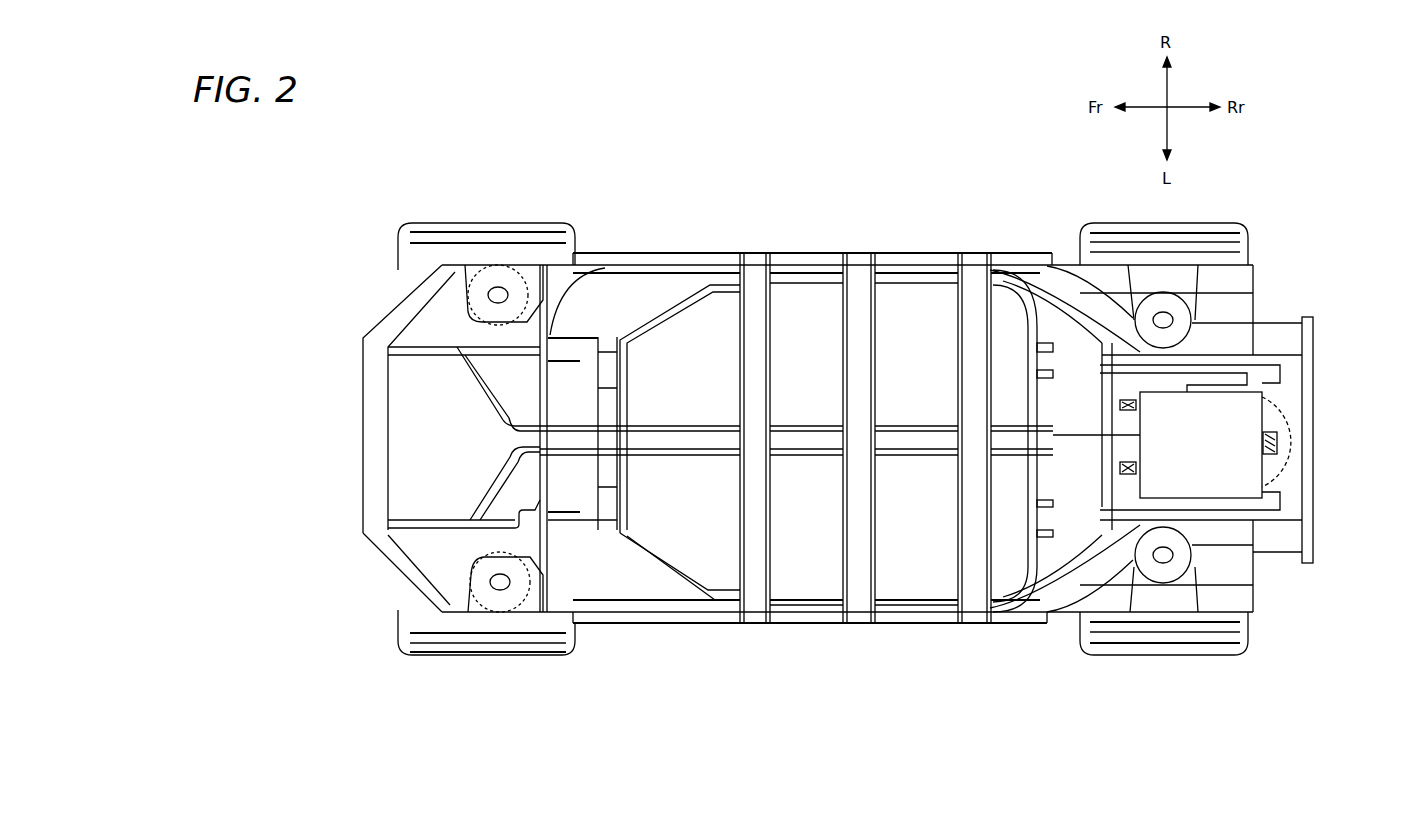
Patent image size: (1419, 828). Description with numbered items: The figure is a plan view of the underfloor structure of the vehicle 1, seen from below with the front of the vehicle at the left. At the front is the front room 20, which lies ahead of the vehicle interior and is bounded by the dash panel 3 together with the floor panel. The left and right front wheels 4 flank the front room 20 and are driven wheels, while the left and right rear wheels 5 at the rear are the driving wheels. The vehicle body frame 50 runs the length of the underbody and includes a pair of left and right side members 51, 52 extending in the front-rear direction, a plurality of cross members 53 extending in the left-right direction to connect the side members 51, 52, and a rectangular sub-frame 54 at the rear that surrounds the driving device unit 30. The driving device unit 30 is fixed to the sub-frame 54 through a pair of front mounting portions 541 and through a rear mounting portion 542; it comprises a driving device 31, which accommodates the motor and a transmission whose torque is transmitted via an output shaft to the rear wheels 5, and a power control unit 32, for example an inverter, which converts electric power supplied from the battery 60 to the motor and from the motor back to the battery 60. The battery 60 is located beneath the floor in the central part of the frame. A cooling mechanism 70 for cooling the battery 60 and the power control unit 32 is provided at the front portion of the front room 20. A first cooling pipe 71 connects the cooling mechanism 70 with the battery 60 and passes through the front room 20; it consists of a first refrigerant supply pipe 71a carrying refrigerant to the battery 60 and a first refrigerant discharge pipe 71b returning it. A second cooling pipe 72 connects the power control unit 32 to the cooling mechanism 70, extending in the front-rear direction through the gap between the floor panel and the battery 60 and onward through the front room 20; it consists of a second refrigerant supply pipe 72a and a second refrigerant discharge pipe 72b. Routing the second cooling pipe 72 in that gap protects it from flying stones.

The vehicle 1 is at (878, 183).
The dash panel 3 is at (583, 362).
The front wheels 4 is at (515, 222).
The rear wheels 5 is at (1190, 222).
The front room 20 is at (437, 456).
The driving device unit 30 is at (1270, 417).
The driving device 31 is at (1243, 478).
The power control unit (PCU) 32 is at (1237, 390).
The vehicle body frame 50 is at (937, 254).
The side member 51 is at (882, 252).
The side member 52 is at (906, 624).
The cross members 53 is at (565, 362).
The sub-frame 54 is at (1273, 393).
The battery 60 is at (803, 344).
The cooling mechanism 70 is at (362, 440).
The first cooling pipe 71 is at (540, 540).
The first refrigerant supply pipe 71a is at (493, 520).
The first refrigerant discharge pipe 71b is at (490, 372).
The second cooling pipe 72 is at (1070, 450).
The second refrigerant supply pipe 72a is at (710, 447).
The second refrigerant discharge pipe 72b is at (672, 422).
The front mounting portions 541 is at (1090, 355).
The rear mounting portion 542 is at (1280, 443).